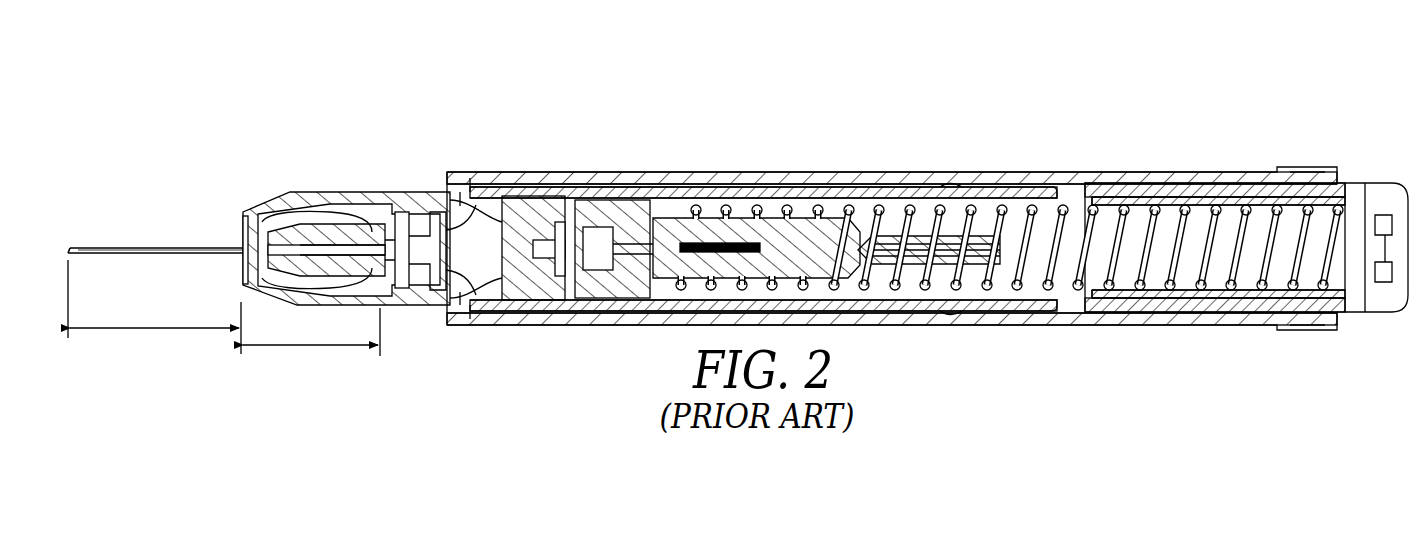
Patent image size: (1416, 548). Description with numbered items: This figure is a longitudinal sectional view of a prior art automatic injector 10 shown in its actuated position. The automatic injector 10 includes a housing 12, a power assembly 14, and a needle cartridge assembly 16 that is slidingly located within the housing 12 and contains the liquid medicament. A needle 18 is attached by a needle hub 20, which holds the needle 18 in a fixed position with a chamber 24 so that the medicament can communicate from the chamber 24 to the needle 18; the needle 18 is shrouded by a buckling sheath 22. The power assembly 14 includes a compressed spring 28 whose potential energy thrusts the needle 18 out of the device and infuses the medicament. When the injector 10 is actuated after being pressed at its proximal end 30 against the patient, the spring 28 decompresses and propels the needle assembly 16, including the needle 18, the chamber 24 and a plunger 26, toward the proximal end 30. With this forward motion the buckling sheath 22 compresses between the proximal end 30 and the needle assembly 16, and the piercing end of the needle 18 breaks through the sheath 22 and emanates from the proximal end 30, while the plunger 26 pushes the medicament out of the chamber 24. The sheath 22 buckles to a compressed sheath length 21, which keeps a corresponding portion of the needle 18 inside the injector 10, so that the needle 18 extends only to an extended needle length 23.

The automatic injector 10 is at (368, 84).
The housing 12 is at (537, 172).
The power assembly 14 is at (1105, 235).
The needle cartridge assembly 16 is at (403, 237).
The needle 18 is at (183, 245).
The needle hub 20 is at (412, 213).
The compressed sheath length 21 is at (290, 347).
The buckling sheath 22 is at (318, 228).
The extended needle length 23 is at (115, 330).
The chamber 24 is at (677, 235).
The plunger 26 is at (593, 290).
The compressed spring 28 is at (1200, 290).
The proximal end 30 is at (244, 214).